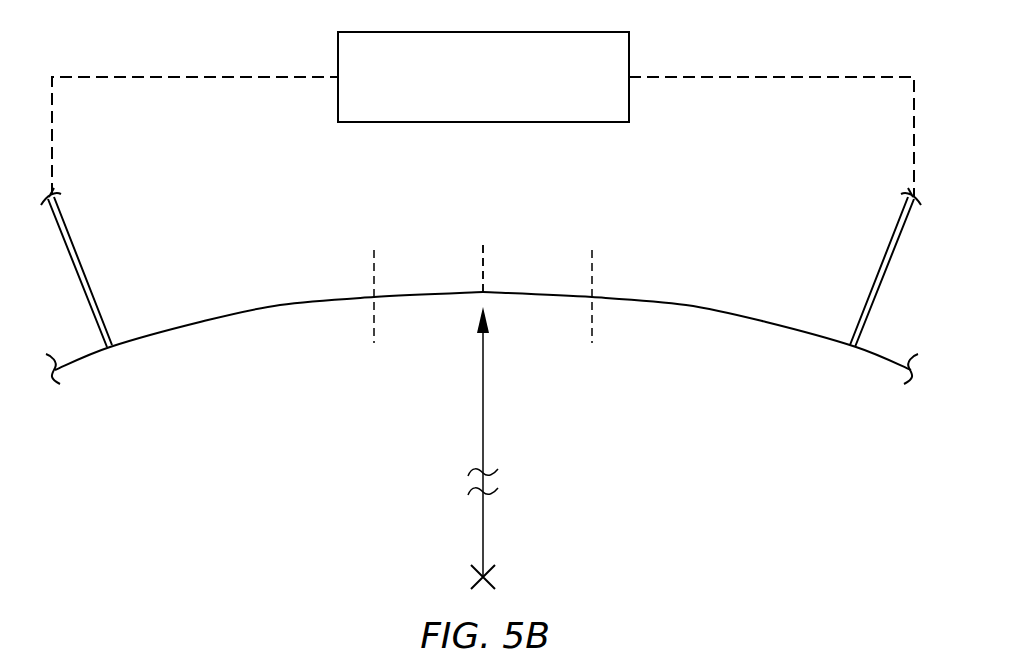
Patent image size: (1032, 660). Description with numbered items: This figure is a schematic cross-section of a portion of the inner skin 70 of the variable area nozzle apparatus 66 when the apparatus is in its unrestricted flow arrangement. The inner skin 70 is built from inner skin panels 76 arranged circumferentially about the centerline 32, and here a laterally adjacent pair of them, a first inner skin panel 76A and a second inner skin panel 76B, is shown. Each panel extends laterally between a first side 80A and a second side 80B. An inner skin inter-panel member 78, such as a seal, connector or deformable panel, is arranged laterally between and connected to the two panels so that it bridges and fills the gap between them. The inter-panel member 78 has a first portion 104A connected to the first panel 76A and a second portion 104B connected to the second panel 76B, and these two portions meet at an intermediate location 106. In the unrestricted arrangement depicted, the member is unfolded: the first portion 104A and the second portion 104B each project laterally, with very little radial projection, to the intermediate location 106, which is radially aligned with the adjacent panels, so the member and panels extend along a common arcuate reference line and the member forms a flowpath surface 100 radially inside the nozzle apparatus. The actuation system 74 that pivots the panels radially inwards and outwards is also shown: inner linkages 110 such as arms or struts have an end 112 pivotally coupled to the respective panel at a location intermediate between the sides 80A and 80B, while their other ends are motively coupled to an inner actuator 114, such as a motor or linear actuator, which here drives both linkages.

The actuation system 74 is at (297, 46).
The inner actuator 114 is at (629, 49).
The variable area nozzle apparatus 66 is at (128, 200).
The inner skin 70 is at (834, 240).
The inner skin panels 76 is at (483, 292).
The first inner skin panel 76A is at (170, 315).
The second inner skin panel 76B is at (737, 305).
The inner skin inter-panel member 78 is at (543, 212).
The inner linkages 110 is at (62, 248).
The end of inner linkage 112 is at (110, 352).
The first portion of inner skin inter-panel member 104A is at (423, 293).
The second portion of inner skin inter-panel member 104B is at (560, 295).
The intermediate location 106 is at (483, 292).
The first side of inner skin panel 80A is at (371, 298).
The second side of inner skin panel 80B is at (592, 300).
The flowpath surface 100 is at (441, 298).
The centerline 32 is at (490, 577).